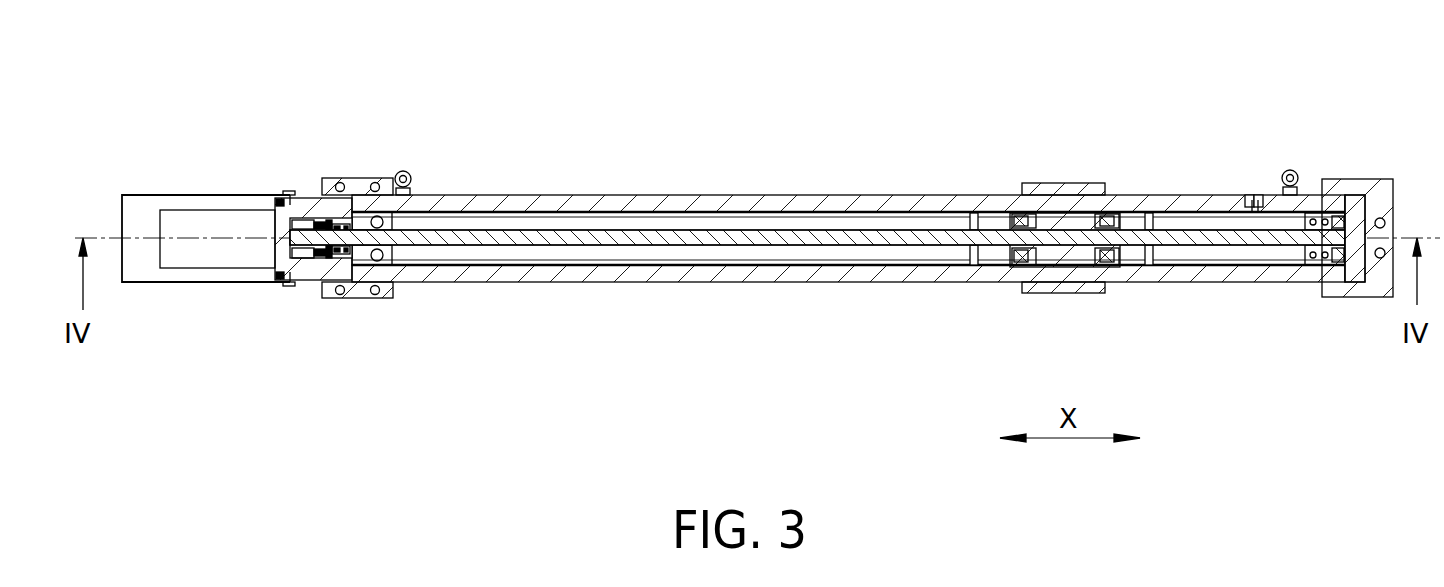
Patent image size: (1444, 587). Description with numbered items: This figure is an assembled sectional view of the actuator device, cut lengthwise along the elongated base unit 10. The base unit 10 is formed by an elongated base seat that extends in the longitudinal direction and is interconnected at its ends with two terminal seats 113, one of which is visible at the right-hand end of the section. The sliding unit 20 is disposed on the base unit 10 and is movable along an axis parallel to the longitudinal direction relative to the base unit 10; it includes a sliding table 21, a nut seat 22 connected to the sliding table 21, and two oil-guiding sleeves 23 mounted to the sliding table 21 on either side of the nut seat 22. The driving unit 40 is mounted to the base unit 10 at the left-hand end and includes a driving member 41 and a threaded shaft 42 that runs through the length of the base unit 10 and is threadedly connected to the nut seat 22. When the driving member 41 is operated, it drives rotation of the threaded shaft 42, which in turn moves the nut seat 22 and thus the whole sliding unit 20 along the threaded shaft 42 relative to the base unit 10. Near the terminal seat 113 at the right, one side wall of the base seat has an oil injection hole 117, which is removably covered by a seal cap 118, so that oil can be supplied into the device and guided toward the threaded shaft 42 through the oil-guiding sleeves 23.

The base unit 10 is at (765, 180).
The driving unit 40 is at (237, 170).
The driving member 41 is at (221, 190).
The threaded shaft 42 is at (657, 235).
The sliding unit 20 is at (1052, 170).
The sliding table 21 is at (1100, 215).
The nut seat 22 is at (1067, 225).
The oil-guiding sleeves 23 is at (1018, 250).
The terminal seats 113 is at (1353, 178).
The oil injection hole 117 is at (1257, 200).
The seal cap 118 is at (1248, 200).